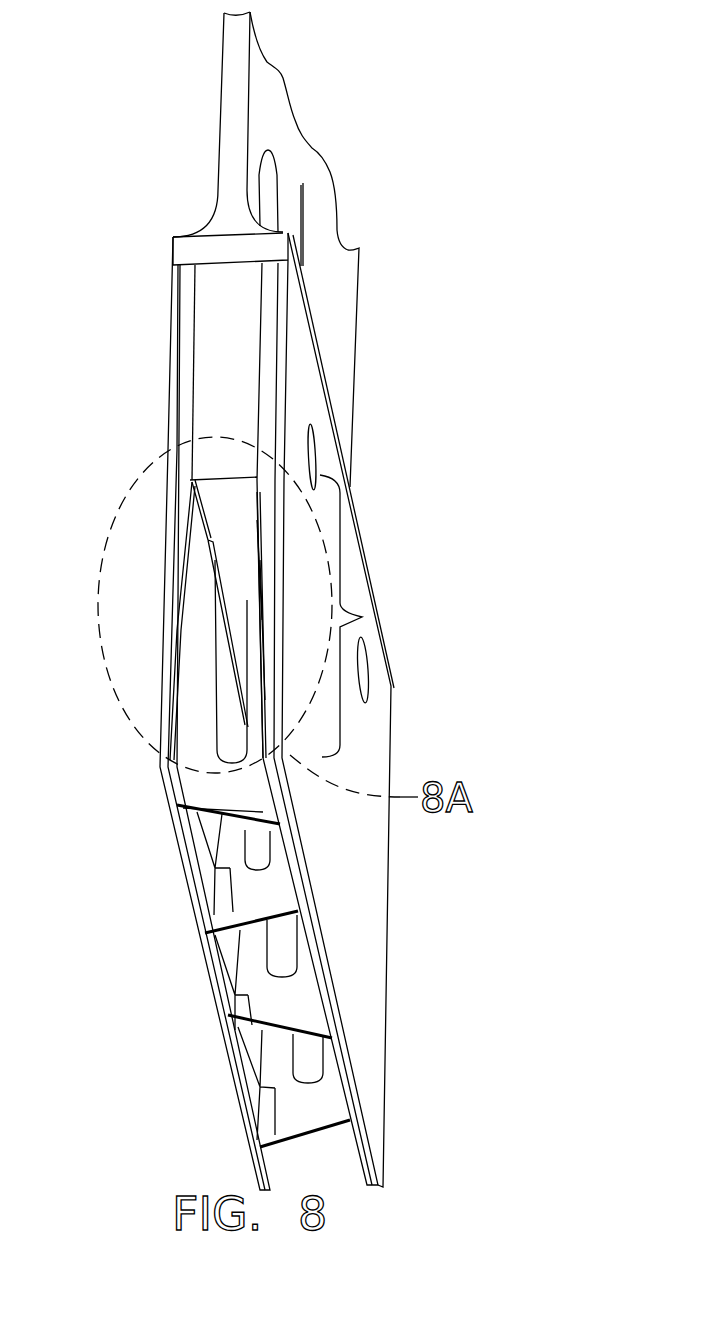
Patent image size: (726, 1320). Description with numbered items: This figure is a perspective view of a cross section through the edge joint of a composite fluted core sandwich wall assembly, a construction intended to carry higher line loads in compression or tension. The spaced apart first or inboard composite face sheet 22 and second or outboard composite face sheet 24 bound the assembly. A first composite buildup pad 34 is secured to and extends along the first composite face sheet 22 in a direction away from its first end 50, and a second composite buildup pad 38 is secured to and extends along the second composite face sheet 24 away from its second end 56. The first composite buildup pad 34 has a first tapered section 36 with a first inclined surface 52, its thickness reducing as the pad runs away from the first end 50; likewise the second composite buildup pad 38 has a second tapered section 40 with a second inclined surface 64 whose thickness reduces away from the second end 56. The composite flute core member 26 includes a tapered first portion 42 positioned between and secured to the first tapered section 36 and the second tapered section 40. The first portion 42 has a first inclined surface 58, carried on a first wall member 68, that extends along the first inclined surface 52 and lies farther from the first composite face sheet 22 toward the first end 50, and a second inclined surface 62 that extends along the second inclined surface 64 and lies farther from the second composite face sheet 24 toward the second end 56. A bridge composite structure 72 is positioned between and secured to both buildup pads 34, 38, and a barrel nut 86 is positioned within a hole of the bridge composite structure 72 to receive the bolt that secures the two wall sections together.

The first composite face sheet 22 is at (187, 883).
The second composite face sheet 24 is at (332, 880).
The composite flute core member 26 is at (255, 900).
The first composite buildup pad 34 is at (190, 330).
The first tapered section 36 is at (183, 528).
The second composite buildup pad 38 is at (268, 322).
The second tapered section 40 is at (263, 515).
The first portion 42 is at (362, 617).
The first end 50 is at (187, 273).
The first inclined surface 52 is at (188, 550).
The second end 56 is at (265, 262).
The first inclined surface 58 is at (180, 595).
The second inclined surface 62 is at (262, 532).
The second inclined surface 64 is at (258, 548).
The first wall member 68 is at (203, 660).
The bridge composite structure 72 is at (235, 350).
The barrel nut 86 is at (372, 666).